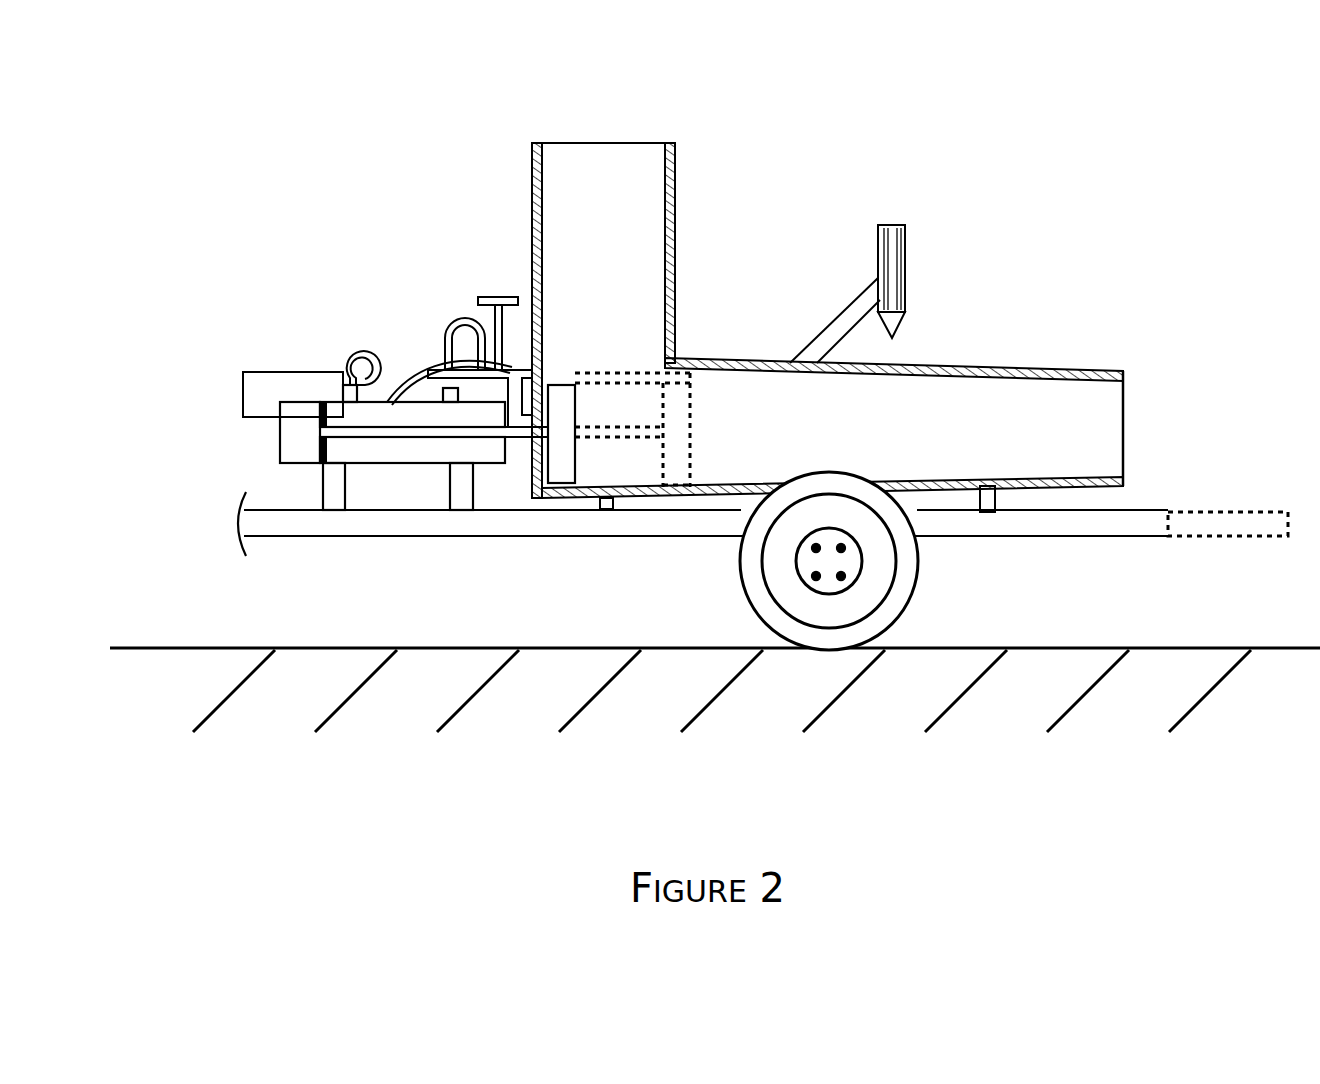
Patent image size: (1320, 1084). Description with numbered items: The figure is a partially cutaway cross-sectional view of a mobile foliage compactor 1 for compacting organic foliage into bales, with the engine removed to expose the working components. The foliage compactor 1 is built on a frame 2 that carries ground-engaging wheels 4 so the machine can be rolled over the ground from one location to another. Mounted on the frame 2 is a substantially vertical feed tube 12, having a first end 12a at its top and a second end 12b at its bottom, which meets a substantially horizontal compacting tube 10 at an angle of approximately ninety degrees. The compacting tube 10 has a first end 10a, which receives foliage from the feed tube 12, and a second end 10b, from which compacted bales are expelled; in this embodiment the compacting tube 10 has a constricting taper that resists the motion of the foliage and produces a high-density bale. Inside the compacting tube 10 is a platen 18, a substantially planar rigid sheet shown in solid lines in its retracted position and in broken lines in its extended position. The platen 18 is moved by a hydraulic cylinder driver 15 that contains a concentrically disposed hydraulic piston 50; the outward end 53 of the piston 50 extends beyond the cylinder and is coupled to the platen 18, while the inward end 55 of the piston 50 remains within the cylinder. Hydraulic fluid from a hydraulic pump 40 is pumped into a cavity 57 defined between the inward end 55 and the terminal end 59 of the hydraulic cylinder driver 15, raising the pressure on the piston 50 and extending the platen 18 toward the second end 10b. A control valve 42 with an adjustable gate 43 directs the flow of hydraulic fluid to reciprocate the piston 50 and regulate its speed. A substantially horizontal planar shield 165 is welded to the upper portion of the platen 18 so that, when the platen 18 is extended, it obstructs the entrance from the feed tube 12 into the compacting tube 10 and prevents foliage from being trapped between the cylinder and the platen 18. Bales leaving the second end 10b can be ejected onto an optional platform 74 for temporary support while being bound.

The foliage compactor 1 is at (1025, 139).
The frame 2 is at (1150, 522).
The ground-engaging wheels 4 is at (870, 592).
The compacting tube 10 is at (906, 361).
The first end of compacting tube 10a is at (745, 365).
The second end of compacting tube 10b is at (1125, 375).
The feed tube 12 is at (689, 269).
The first end of feed tube 12a is at (676, 178).
The second end of feed tube 12b is at (678, 338).
The hydraulic cylinder driver 15 is at (433, 453).
The platen 18 is at (563, 492).
The hydraulic pump 40 is at (272, 382).
The control valve 42 is at (503, 398).
The gate 43 is at (488, 297).
The hydraulic piston 50 is at (518, 433).
The outward end of piston 53 is at (657, 423).
The inward end of piston 55 is at (330, 380).
The cavity 57 is at (302, 418).
The terminal end of hydraulic cylinder driver 59 is at (275, 432).
The platform 74 is at (1232, 527).
The shield 165 is at (437, 348).